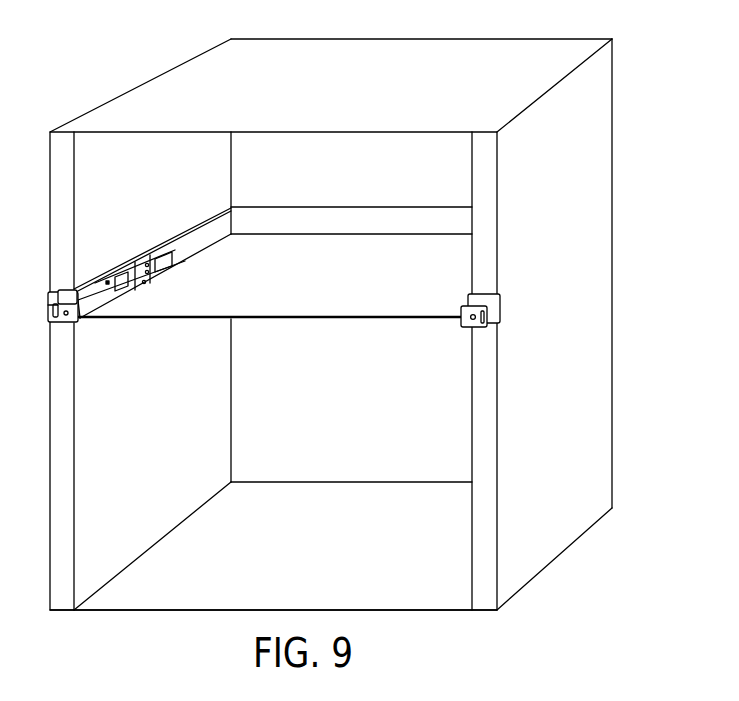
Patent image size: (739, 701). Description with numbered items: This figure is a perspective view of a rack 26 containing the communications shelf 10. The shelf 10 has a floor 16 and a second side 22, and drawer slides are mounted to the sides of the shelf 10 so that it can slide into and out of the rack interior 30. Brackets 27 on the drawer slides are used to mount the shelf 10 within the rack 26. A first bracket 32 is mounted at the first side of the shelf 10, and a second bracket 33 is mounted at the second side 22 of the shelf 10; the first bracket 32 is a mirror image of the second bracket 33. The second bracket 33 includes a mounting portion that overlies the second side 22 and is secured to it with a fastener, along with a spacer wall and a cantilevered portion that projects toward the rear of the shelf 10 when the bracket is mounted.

The shelf 10 is at (137, 272).
The floor 16 is at (339, 281).
The second side 22 is at (207, 242).
The rack 26 is at (597, 306).
The brackets 27 is at (52, 297).
The rack interior 30 is at (200, 595).
The first bracket 32 is at (465, 320).
The second bracket 33 is at (90, 303).